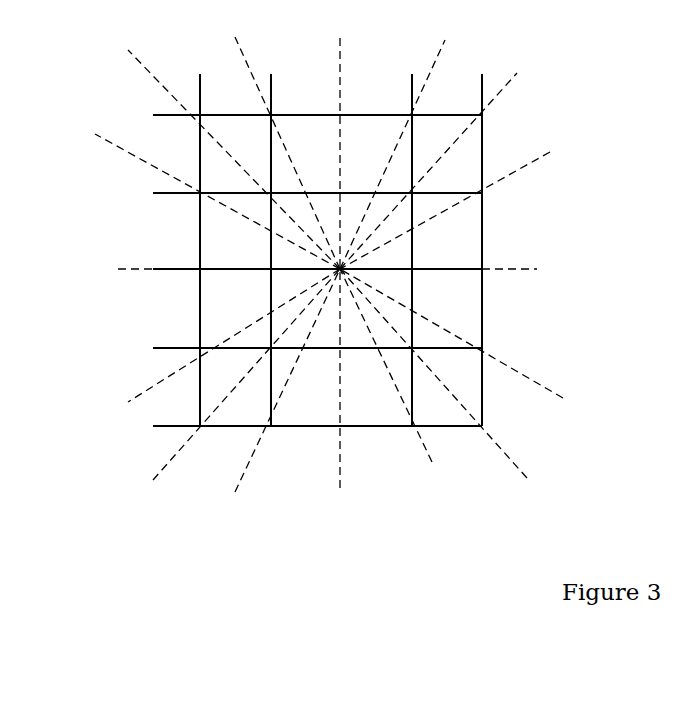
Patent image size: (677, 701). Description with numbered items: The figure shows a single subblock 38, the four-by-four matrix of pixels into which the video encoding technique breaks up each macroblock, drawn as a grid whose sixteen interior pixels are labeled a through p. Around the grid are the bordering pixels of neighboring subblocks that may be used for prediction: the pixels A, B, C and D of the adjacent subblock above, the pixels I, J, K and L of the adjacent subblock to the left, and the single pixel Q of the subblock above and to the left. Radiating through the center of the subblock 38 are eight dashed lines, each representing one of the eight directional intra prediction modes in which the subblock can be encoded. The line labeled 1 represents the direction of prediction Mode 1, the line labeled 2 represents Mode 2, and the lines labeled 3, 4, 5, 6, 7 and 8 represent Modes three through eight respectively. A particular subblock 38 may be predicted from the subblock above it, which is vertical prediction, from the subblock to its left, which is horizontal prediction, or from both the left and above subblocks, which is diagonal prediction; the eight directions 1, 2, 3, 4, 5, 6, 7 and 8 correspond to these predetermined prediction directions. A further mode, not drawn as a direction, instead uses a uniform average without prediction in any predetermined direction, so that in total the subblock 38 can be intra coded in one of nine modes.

The prediction direction of Mode 1 is at (343, 450).
The prediction direction of Mode 2 is at (523, 268).
The prediction direction of Mode 3 is at (162, 463).
The prediction direction of Mode 4 is at (507, 455).
The prediction direction of Mode 5 is at (530, 163).
The prediction direction of Mode 6 is at (542, 388).
The prediction direction of Mode 7 is at (430, 462).
The prediction direction of Mode 8 is at (245, 470).
The subblock 38 is at (192, 253).